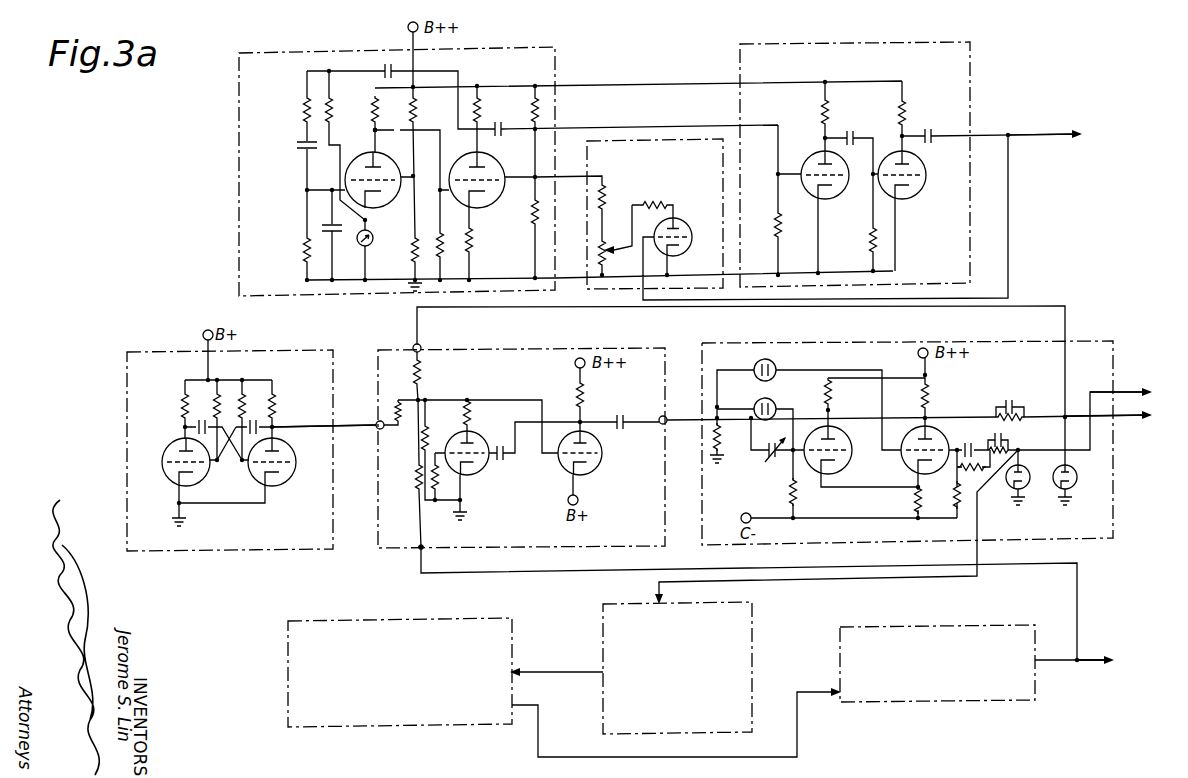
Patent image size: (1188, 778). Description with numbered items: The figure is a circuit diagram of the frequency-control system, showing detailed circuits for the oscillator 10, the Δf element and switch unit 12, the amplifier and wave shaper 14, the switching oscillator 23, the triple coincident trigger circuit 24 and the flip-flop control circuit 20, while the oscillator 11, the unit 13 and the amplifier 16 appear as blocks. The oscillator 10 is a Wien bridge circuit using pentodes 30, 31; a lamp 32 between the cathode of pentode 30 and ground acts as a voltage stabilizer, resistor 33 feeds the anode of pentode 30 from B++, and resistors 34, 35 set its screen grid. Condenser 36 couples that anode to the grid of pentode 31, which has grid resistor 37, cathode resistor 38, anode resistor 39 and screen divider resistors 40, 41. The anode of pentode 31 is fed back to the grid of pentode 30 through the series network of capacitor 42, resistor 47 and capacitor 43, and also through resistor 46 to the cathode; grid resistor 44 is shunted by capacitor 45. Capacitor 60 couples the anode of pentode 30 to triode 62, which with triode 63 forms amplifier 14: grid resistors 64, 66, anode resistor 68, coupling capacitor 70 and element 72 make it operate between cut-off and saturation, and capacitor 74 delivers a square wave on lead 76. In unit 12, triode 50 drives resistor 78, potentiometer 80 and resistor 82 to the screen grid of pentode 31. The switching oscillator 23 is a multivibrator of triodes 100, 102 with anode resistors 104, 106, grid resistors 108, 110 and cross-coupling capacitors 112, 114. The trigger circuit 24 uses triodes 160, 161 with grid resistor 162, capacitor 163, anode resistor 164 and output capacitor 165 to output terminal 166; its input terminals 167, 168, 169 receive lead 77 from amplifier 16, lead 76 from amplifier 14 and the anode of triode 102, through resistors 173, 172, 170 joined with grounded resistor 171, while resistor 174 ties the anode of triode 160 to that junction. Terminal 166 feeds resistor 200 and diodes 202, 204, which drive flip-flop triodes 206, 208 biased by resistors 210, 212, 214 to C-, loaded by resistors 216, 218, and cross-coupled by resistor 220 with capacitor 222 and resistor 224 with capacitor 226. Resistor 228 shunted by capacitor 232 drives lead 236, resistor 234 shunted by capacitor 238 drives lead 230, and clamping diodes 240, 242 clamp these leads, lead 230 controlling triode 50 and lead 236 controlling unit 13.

The oscillator 10 is at (290, 34).
The Δf element and switch unit 12 is at (700, 124).
The amplifier and wave shaper 14 is at (944, 44).
The switching oscillator 23 is at (165, 350).
The triple coincident trigger circuit 24 is at (605, 346).
The control circuit 20 is at (1132, 348).
The oscillator 11 is at (400, 672).
The unit 13 is at (677, 668).
The amplifier and wave shaper 16 is at (937, 663).
The pentode 30 is at (367, 153).
The pentode 31 is at (505, 190).
The lamp 32 is at (372, 246).
The resistor 33 is at (373, 130).
The resistor 34 is at (427, 110).
The resistor 35 is at (413, 248).
The condenser 36 is at (388, 110).
The resistor 37 is at (443, 252).
The resistor 38 is at (473, 240).
The resistor 39 is at (480, 104).
The resistor 40 is at (533, 112).
The resistor 41 is at (533, 215).
The capacitor 42 is at (380, 72).
The capacitor 43 is at (297, 150).
The resistor 44 is at (305, 252).
The capacitor 45 is at (338, 236).
The resistor 46 is at (334, 110).
The resistor 47 is at (303, 110).
The triode 50 is at (686, 226).
The capacitor 60 is at (504, 136).
The triode 62 is at (817, 143).
The triode 63 is at (897, 152).
The resistor 64 is at (783, 228).
The resistor 66 is at (870, 240).
The resistor 68 is at (830, 112).
The capacitor 70 is at (853, 131).
The capacitor 72 is at (906, 112).
The capacitor 74 is at (932, 130).
The lead 76 is at (1050, 134).
The lead 77 is at (1100, 660).
The resistor 78 is at (660, 203).
The potentiometer 80 is at (606, 250).
The resistor 82 is at (606, 197).
The triode 100 is at (172, 478).
The triode 102 is at (258, 478).
The resistor 104 is at (182, 410).
The resistor 106 is at (276, 410).
The resistor 108 is at (214, 410).
The resistor 110 is at (245, 410).
The capacitor 112 is at (182, 427).
The capacitor 114 is at (275, 426).
The triode 160 is at (476, 478).
The triode 161 is at (604, 458).
The resistor 162 is at (430, 500).
The capacitor 163 is at (505, 465).
The resistor 164 is at (585, 398).
The capacitor 165 is at (625, 416).
The output terminal 166 is at (665, 416).
The input terminal 167 is at (418, 550).
The input terminal 168 is at (413, 346).
The input terminal 169 is at (378, 421).
The resistor 170 is at (398, 424).
The resistor 171 is at (432, 420).
The resistor 172 is at (425, 374).
The resistor 173 is at (416, 477).
The resistor 174 is at (474, 413).
The resistor 200 is at (722, 456).
The diode 202 is at (776, 366).
The diode 204 is at (776, 403).
The triode 206 is at (912, 472).
The triode 208 is at (838, 474).
The resistor 210 is at (798, 495).
The resistor 212 is at (955, 495).
The resistor 214 is at (914, 500).
The resistor 216 is at (833, 392).
The resistor 218 is at (929, 396).
The resistor 220 is at (768, 462).
The capacitor 222 is at (778, 458).
The resistor 224 is at (975, 472).
The capacitor 226 is at (968, 440).
The resistor 228 is at (1022, 415).
The lead 230 is at (1115, 392).
The capacitor 232 is at (1012, 402).
The resistor 234 is at (1010, 450).
The lead 236 is at (1115, 418).
The capacitor 238 is at (1010, 440).
The clamping diode 240 is at (1057, 488).
The clamping diode 242 is at (1010, 488).